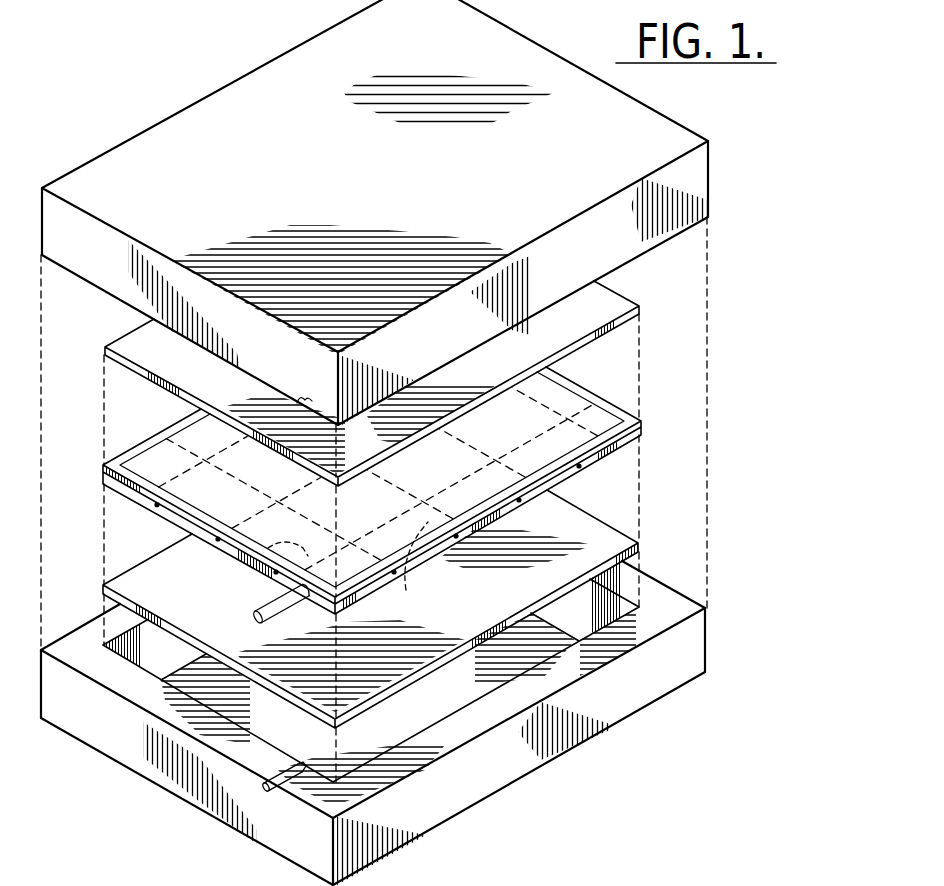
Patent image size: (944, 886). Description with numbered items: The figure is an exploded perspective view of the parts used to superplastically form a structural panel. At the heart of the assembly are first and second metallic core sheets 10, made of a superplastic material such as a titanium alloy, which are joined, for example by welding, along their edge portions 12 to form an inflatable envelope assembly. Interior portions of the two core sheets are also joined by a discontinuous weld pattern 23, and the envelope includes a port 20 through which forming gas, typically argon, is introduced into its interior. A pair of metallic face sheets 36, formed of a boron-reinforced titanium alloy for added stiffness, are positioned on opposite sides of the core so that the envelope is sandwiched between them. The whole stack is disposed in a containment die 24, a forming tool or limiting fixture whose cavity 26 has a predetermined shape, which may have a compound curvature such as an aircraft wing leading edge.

The containment die 24 is at (693, 187).
The metallic face sheets 36 is at (640, 311).
The metallic core sheets 10 is at (612, 412).
The edge portions 12 is at (145, 487).
The discontinuous weld pattern 23 is at (240, 566).
The port 20 is at (275, 600).
The cavity 26 is at (547, 642).